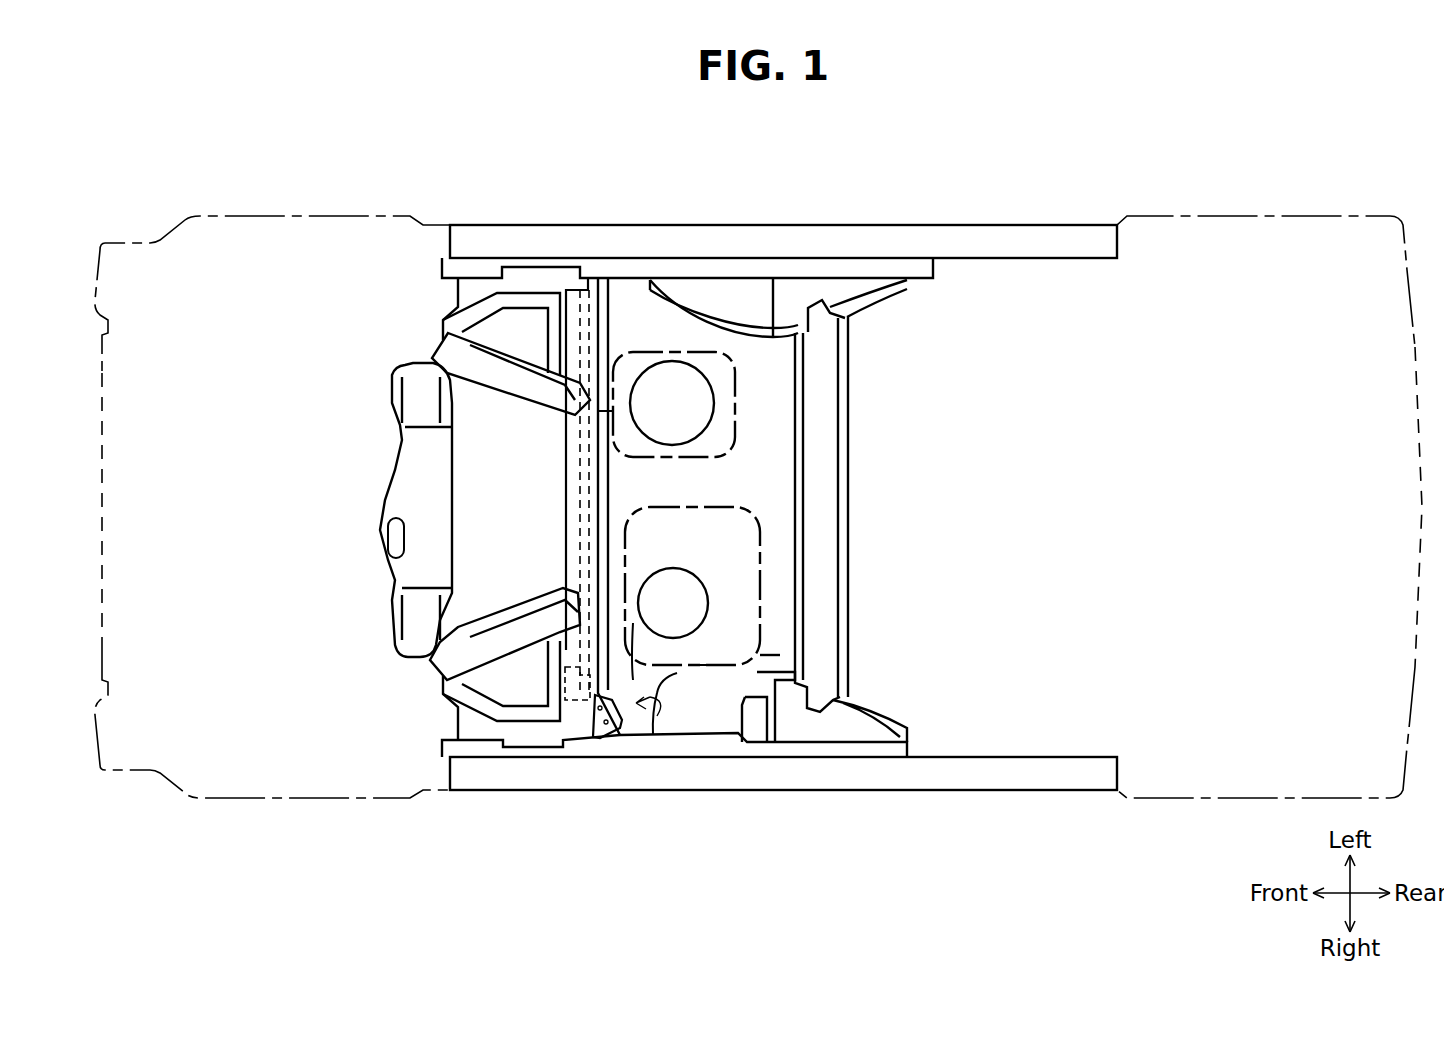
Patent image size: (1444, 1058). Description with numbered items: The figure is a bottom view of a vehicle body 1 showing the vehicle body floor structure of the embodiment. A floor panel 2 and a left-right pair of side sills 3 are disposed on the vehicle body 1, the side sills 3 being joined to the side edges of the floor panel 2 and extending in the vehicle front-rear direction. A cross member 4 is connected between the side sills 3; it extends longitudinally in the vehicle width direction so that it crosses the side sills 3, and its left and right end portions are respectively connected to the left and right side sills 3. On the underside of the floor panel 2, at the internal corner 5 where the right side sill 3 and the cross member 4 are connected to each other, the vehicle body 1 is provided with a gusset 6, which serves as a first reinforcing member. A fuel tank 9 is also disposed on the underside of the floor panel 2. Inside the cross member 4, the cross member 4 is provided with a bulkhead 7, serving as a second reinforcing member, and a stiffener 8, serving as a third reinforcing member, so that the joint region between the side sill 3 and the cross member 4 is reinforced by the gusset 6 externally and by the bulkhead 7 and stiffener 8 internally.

The vehicle body 1 is at (1303, 174).
The floor panel 2 is at (681, 333).
The side sills 3 is at (790, 242).
The cross member 4 is at (572, 520).
The internal corner 5 is at (653, 735).
The gusset 6 is at (600, 738).
The bulkhead 7 is at (573, 685).
The stiffener 8 is at (598, 411).
The fuel tank 9 is at (717, 660).